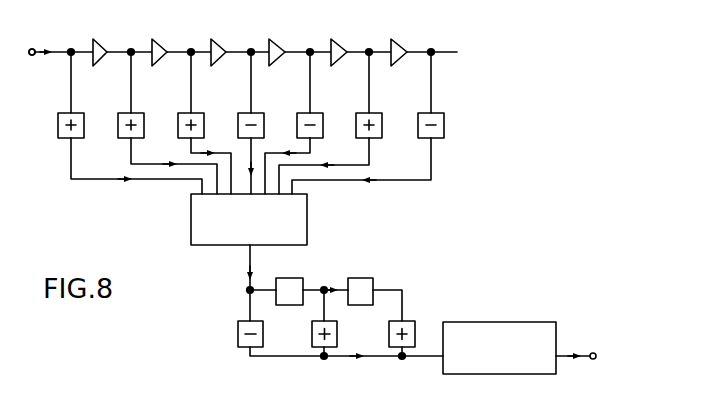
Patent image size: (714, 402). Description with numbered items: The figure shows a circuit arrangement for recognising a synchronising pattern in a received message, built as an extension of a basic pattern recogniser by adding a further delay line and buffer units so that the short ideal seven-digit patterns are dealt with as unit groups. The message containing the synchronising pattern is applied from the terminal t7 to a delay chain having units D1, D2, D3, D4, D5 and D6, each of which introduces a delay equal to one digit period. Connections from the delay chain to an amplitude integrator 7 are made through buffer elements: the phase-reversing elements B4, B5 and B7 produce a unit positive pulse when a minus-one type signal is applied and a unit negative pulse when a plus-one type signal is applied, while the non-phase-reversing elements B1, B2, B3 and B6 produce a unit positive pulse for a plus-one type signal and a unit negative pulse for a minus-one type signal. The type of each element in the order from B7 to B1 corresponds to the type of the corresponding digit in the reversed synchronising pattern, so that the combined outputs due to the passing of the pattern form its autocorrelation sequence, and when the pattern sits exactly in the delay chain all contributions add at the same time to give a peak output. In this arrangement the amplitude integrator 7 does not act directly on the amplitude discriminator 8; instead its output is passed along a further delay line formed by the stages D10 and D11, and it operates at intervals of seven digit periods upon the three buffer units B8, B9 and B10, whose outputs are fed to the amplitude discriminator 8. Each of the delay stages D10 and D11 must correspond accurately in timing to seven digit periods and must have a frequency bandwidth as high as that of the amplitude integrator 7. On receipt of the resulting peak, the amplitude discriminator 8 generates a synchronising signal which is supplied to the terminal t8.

The input terminal t7 is at (36, 40).
The delay unit D1 is at (93, 40).
The delay unit D2 is at (152, 40).
The delay unit D3 is at (211, 40).
The delay unit D4 is at (269, 40).
The delay unit D5 is at (331, 40).
The delay unit D6 is at (391, 40).
The non-phase-reversing buffer element B1 is at (63, 106).
The non-phase-reversing buffer element B2 is at (122, 106).
The non-phase-reversing buffer element B3 is at (182, 106).
The phase-reversing buffer element B4 is at (241, 106).
The phase-reversing buffer element B5 is at (300, 106).
The non-phase-reversing buffer element B6 is at (358, 106).
The phase-reversing buffer element B7 is at (420, 106).
The amplitude integrator 7 is at (307, 220).
The delay stage D10 is at (278, 278).
The delay stage D11 is at (350, 278).
The buffer unit B8 is at (238, 341).
The buffer unit B9 is at (312, 341).
The buffer unit B10 is at (389, 341).
The amplitude discriminator 8 is at (492, 322).
The output terminal t8 is at (581, 347).